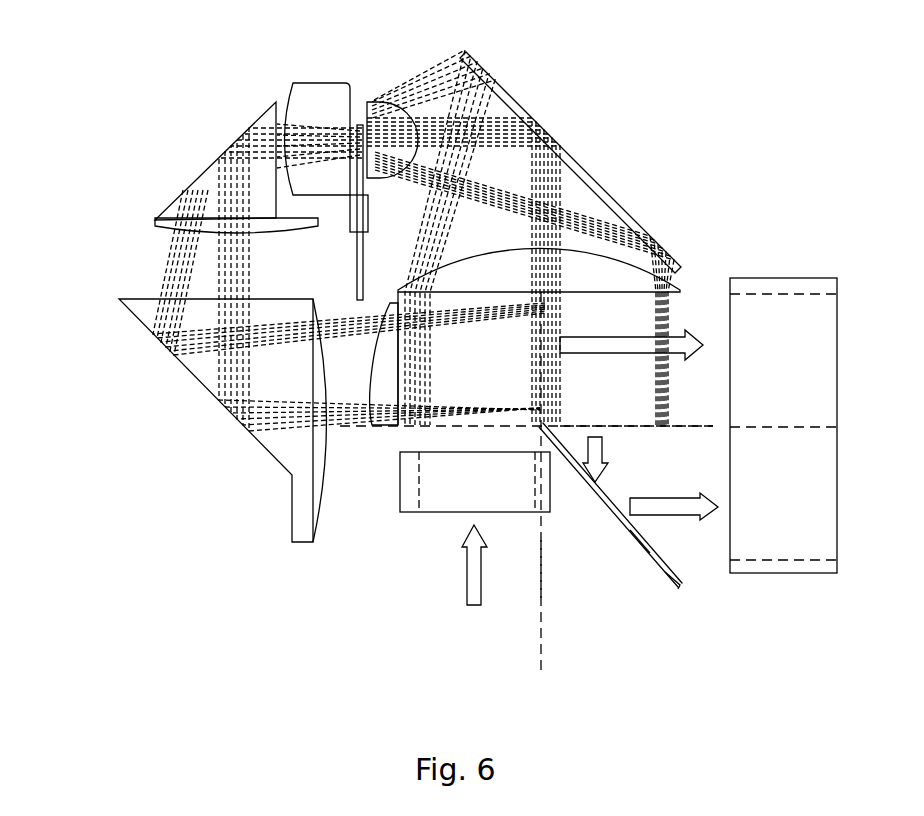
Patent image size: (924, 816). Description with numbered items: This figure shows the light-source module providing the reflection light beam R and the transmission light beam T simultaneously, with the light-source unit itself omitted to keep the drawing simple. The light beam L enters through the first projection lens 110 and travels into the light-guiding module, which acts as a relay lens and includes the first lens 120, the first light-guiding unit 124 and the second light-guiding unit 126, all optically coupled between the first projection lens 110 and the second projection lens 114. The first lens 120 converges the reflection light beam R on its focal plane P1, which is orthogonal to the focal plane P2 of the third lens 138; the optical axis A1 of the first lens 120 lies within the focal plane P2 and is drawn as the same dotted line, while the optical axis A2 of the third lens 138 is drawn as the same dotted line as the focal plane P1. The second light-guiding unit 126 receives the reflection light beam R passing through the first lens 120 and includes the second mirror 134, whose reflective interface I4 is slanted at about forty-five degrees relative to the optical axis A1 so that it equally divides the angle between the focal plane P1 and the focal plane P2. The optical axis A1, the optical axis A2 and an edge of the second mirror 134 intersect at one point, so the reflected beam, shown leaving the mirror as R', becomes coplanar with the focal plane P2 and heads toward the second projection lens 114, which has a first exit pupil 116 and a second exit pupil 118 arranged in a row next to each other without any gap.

The first light-guiding unit 124 is at (153, 140).
The first lens 120 is at (681, 292).
The third lens 138 is at (373, 383).
The first projection lens 110 is at (400, 512).
The second light-guiding unit 126 is at (628, 537).
The second mirror 134 is at (681, 590).
The second projection lens 114 is at (838, 278).
The first exit pupil 116 is at (789, 291).
The second exit pupil 118 is at (790, 573).
The optical axis of the first lens A1 is at (553, 270).
The optical axis of the third lens A2 is at (347, 433).
The focal plane of the first lens P1 is at (683, 423).
The focal plane of the third lens P2 is at (538, 584).
The transmission light beam T is at (703, 337).
The reflection light beam R is at (616, 458).
The re-reflected beam R' is at (674, 491).
The light beam L is at (465, 562).
The reflective interface I4 is at (657, 542).